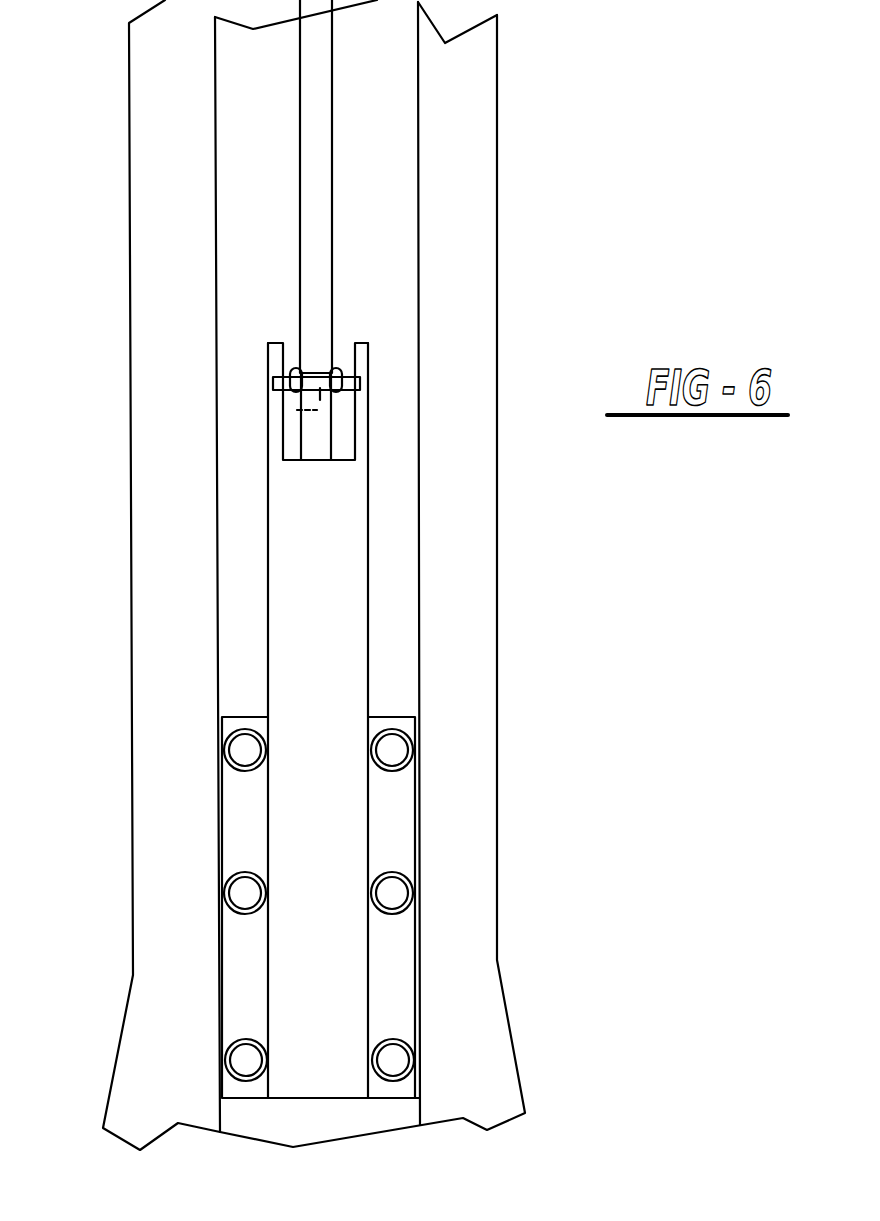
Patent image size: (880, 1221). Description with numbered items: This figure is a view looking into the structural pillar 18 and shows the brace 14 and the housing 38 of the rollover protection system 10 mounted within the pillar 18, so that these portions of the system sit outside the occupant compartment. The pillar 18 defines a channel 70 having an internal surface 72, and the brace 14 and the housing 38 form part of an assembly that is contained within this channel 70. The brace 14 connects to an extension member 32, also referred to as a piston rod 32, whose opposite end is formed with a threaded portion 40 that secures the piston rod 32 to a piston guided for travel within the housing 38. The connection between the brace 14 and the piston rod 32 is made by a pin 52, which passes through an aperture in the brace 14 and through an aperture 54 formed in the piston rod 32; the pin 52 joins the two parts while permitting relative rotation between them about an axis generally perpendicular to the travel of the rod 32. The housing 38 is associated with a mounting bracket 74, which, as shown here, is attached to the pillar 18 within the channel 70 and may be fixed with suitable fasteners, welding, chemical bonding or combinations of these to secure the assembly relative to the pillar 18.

The rollover protection system 10 is at (245, 312).
The brace 14 is at (315, 68).
The pillar 18 is at (182, 511).
The extension member 32 is at (307, 437).
The housing 38 is at (325, 667).
The threaded portion 40 is at (318, 372).
The pin 52 is at (357, 387).
The aperture 54 is at (283, 407).
The channel 70 is at (415, 68).
The internal surface 72 is at (242, 583).
The mounting bracket 74 is at (400, 980).